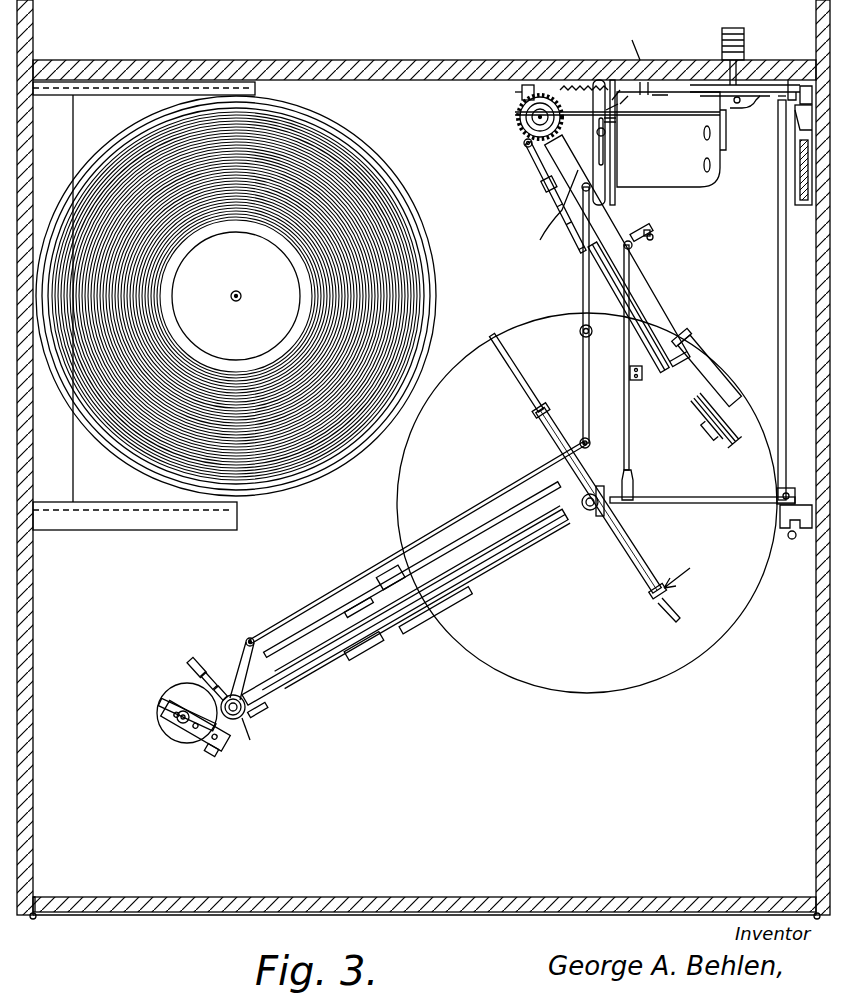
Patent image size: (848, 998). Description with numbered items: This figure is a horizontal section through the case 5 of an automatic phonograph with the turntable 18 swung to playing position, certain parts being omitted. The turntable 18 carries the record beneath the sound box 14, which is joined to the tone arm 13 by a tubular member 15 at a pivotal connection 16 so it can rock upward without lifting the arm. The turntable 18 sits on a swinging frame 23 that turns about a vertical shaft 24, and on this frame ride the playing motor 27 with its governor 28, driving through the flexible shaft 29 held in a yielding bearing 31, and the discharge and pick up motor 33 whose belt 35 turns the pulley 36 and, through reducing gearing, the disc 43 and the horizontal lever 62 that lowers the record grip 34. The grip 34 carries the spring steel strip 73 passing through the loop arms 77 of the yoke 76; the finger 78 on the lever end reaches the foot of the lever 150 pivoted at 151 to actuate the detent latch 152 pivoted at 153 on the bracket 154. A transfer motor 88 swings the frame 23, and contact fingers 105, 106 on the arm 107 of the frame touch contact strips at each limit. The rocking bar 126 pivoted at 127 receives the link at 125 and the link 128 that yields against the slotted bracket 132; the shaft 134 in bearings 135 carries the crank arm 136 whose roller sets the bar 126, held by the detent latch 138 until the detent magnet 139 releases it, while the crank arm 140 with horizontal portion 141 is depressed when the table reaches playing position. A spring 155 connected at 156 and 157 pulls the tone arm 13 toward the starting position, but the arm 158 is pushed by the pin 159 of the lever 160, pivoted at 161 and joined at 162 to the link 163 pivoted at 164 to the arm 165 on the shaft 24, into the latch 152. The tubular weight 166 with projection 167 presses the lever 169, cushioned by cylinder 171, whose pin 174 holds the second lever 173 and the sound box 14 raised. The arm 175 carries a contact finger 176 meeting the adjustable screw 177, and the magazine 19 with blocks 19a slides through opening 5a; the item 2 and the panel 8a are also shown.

The lever 2 is at (175, 712).
The case 5 is at (36, 42).
The opening 5a is at (36, 538).
The bottom panel 8a is at (290, 897).
The tone arm 13 is at (642, 300).
The sound box 14 is at (715, 440).
The tubular member 15 is at (720, 372).
The pivotal connection 16 is at (700, 337).
The turntable 18 is at (587, 503).
The magazine 19 is at (418, 237).
The blocks 19a is at (144, 287).
The swinging frame 23 is at (300, 710).
The vertical shaft 24 is at (250, 740).
The playing motor 27 is at (168, 732).
The governor 28 is at (221, 702).
The flexible shaft 29 is at (252, 646).
The yielding bearing 31 is at (360, 598).
The discharge and pick up motor 33 is at (196, 752).
The record grip 34 is at (680, 570).
The belt 35 is at (306, 628).
The pulley 36 is at (338, 608).
The disc 43 is at (328, 680).
The horizontal lever 62 is at (318, 720).
The spring steel strip 73 is at (680, 616).
The yoke 76 is at (612, 535).
The loop arms 77 is at (535, 420).
The finger 78 is at (622, 478).
The transfer motor 88 is at (668, 139).
The contact finger 105 is at (190, 660).
The contact finger 106 is at (220, 688).
The laterally extending arm 107 is at (208, 672).
The pivotal connection 125 is at (598, 80).
The rocking bar 126 is at (580, 80).
The pivot 127 is at (620, 80).
The link 128 is at (640, 112).
The slotted bracket 132 is at (624, 126).
The shaft 134 is at (778, 283).
The bearings 135 is at (790, 80).
The crank arm 136 is at (754, 82).
The detent latch 138 is at (720, 92).
The detent magnet 139 is at (740, 32).
The crank arm 140 is at (722, 497).
The horizontal portion 141 is at (596, 484).
The lever 150 is at (630, 414).
The pivot 151 is at (630, 373).
The detent latch 152 is at (646, 222).
The pivot 153 is at (652, 244).
The bracket 154 is at (652, 236).
The spring 155 is at (518, 112).
The spring connection 156 is at (542, 175).
The spring connection 157 is at (626, 48).
The arm 158 is at (566, 198).
The pin 159 is at (576, 236).
The lever 160 is at (582, 289).
The pivot 161 is at (580, 334).
The pivotal connection 162 is at (602, 434).
The link 163 is at (496, 495).
The pivot 164 is at (248, 636).
The arm 165 is at (243, 640).
The tubular weight 166 is at (525, 126).
The projection 167 is at (522, 88).
The lever 169 is at (556, 188).
The cylinder 171 is at (524, 147).
The second lever 173 is at (618, 275).
The pin 174 is at (540, 240).
The laterally extending arm 175 is at (699, 132).
The contact finger 176 is at (746, 110).
The adjustable screw 177 is at (795, 185).